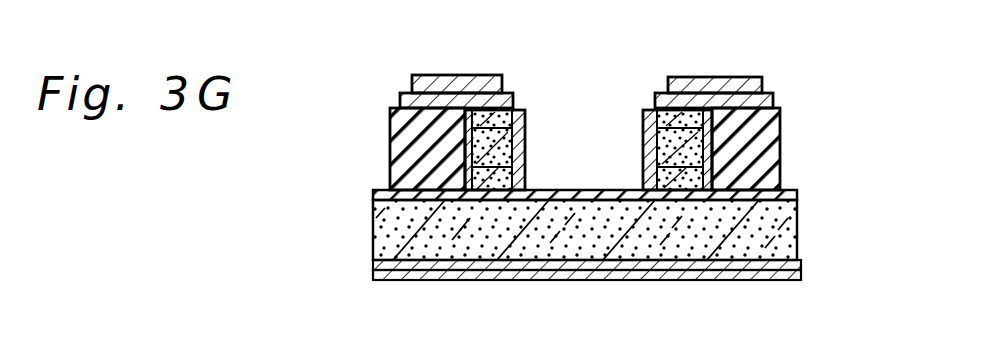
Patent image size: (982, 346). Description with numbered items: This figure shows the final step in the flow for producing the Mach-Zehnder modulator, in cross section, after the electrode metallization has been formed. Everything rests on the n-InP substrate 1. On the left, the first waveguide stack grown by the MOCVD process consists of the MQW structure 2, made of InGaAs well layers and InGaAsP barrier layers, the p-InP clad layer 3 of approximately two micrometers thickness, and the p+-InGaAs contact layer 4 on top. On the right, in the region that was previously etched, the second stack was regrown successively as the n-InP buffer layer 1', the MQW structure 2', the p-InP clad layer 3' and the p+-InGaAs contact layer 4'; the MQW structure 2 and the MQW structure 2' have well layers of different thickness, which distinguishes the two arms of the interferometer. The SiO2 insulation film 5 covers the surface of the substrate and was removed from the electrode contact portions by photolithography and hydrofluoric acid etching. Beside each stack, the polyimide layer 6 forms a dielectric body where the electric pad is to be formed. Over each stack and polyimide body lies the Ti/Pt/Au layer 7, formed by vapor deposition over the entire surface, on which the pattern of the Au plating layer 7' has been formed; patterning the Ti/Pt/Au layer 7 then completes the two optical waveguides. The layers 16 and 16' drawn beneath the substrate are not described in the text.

The n-InP substrate 1 is at (558, 232).
The MQW structure 2 is at (517, 171).
The p-InP clad layer 3 is at (517, 138).
The p+-InGaAs contact layer 4 is at (515, 129).
The SiO2 insulation film 5 is at (790, 194).
The polyimide layer 6 is at (405, 156).
The Ti/Pt/Au layer 7 is at (599, 62).
The Au plating layer 7' is at (591, 54).
The n-InP buffer layer 1' is at (654, 150).
The MQW structure 2' is at (648, 149).
The p-InP clad layer 3' is at (648, 115).
The p+-InGaAs contact layer 4' is at (660, 74).
The lower backside layer 16 is at (587, 306).
The upper backside layer 16' is at (587, 303).